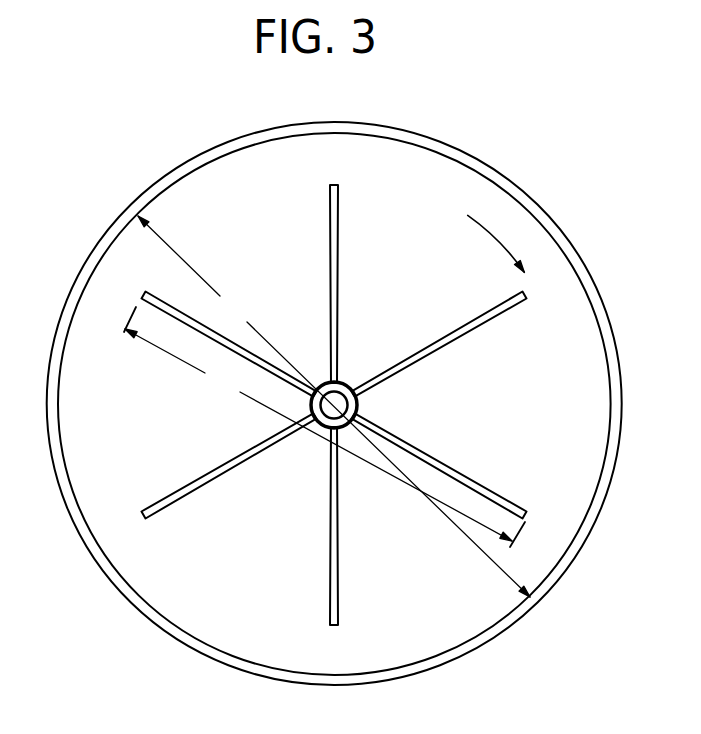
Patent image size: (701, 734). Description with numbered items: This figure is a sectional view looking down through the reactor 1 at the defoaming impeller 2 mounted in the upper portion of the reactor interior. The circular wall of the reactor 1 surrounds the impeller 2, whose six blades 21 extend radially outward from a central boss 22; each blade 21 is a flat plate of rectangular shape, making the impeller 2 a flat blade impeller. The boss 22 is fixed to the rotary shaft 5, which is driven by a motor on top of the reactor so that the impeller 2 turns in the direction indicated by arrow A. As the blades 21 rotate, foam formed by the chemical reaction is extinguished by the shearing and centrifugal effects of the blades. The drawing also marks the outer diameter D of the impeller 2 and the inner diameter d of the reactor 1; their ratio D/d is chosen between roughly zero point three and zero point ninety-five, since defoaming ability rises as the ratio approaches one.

The reactor 1 is at (102, 558).
The impeller 2 is at (334, 405).
The blades 21 is at (484, 315).
The boss 22 is at (365, 410).
The rotary shaft 5 is at (350, 423).
The inner diameter of the reactor d is at (334, 406).
The outer diameter of the impeller D is at (324, 427).
The rotation direction A is at (496, 240).